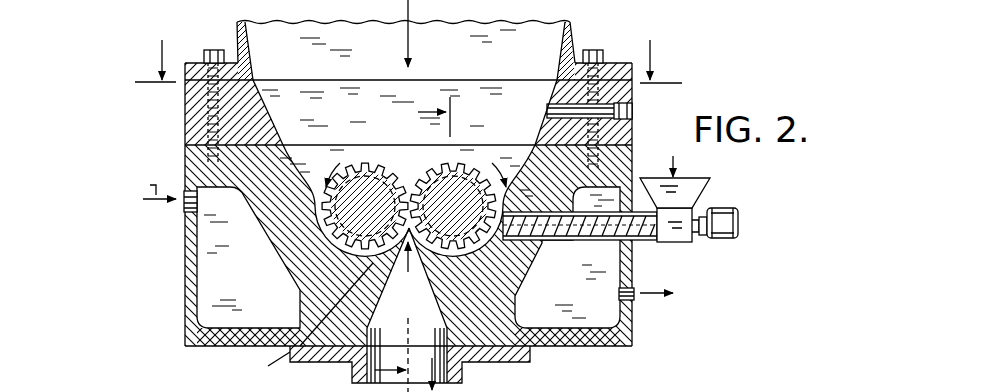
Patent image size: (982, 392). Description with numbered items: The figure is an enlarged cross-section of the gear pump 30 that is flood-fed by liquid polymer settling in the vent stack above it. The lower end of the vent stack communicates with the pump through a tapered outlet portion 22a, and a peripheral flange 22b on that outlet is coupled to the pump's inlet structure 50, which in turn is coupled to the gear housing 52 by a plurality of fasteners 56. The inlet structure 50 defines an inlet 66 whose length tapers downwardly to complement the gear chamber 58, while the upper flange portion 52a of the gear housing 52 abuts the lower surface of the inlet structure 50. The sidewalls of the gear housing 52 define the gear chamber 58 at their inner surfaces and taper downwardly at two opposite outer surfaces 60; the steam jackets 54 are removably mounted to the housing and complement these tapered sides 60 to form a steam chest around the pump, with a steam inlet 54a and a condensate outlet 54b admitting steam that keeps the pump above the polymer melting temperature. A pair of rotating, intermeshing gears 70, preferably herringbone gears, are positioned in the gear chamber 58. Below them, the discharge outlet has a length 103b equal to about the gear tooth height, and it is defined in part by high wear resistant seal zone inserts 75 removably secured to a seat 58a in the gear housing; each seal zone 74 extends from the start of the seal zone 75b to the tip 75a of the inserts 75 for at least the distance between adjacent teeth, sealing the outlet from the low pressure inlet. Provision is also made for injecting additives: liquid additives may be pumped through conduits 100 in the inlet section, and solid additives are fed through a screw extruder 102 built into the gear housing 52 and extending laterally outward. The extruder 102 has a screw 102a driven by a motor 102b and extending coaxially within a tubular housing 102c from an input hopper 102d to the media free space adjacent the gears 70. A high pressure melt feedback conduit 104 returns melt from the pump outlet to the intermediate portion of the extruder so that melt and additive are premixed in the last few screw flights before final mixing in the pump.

The gear pump 30 is at (160, 128).
The tapered outlet portion 22a is at (570, 42).
The peripheral flange 22b is at (620, 68).
The inlet structure 50 is at (633, 101).
The gear housing 52 is at (184, 163).
The upper flange portion 52a is at (619, 167).
The steam jacket 54 is at (186, 302).
The steam inlet 54a is at (184, 206).
The condensate outlet 54b is at (634, 301).
The fasteners 56 is at (212, 50).
The gear chamber 58 is at (291, 165).
The seat 58a is at (350, 262).
The tapered outer surfaces 60 is at (265, 237).
The inlet 66 is at (271, 107).
The intermeshing gears 70 is at (361, 165).
The seal zone 74 is at (409, 267).
The seal zone inserts 75 is at (360, 272).
The tip of the inserts 75a is at (365, 206).
The start of the seal zone 75b is at (452, 205).
The conduits 100 is at (549, 112).
The screw extruder 102 is at (735, 241).
The screw 102a is at (636, 242).
The motor 102b is at (734, 216).
The tubular housing 102c is at (580, 241).
The input hopper 102d is at (700, 188).
The length of the outlet opening 103b is at (411, 269).
The high pressure melt feedback conduit 104 is at (443, 309).